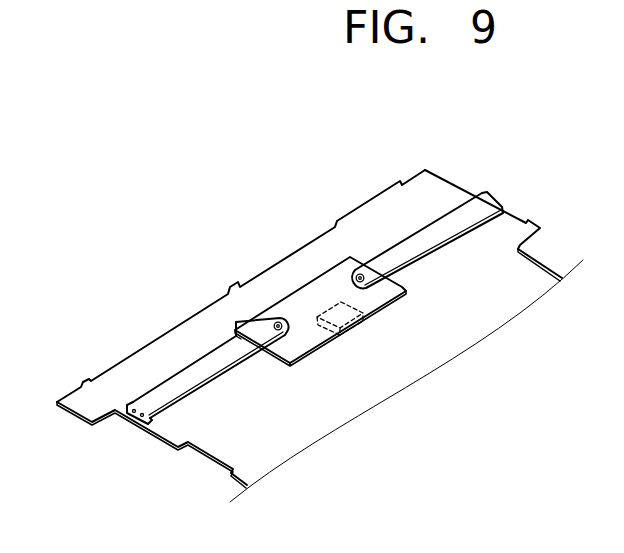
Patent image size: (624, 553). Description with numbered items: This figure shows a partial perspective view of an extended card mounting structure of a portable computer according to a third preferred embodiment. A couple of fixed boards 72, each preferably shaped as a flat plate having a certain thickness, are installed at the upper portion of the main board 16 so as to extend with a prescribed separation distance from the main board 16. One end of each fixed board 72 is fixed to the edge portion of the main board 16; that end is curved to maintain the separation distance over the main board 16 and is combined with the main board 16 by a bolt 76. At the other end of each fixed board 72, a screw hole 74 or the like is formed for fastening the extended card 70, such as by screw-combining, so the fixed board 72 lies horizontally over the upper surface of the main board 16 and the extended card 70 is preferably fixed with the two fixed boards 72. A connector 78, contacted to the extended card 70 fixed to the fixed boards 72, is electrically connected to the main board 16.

The main board 16 is at (387, 208).
The extended card 70 is at (302, 297).
The fixed board 72 is at (174, 389).
The screw hole 74 is at (236, 321).
The bolt 76 is at (128, 418).
The connector 78 is at (358, 324).